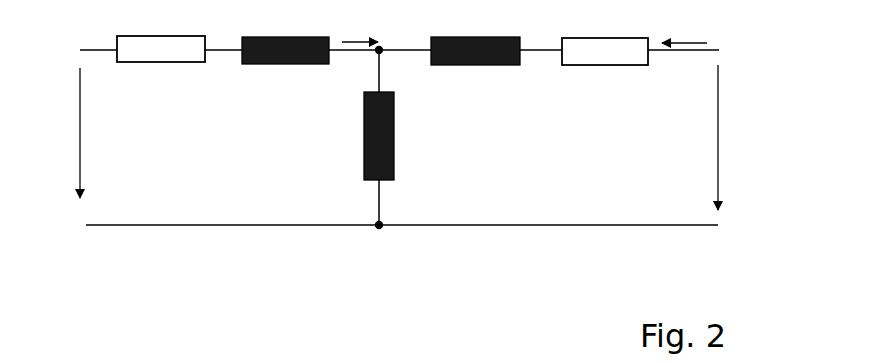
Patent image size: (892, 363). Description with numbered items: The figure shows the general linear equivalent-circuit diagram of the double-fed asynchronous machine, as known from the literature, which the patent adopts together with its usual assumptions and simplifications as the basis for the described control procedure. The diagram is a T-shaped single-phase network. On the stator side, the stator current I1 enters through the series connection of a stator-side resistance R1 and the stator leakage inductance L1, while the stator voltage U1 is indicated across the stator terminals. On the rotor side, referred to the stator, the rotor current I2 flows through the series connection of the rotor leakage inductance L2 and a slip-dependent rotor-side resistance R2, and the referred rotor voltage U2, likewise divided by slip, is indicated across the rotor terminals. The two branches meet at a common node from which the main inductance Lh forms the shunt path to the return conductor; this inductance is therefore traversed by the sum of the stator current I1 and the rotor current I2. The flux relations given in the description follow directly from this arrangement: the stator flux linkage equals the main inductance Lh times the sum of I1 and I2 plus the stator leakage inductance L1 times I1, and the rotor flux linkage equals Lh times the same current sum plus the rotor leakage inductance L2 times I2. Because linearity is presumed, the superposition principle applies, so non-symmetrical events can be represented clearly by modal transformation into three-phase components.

The rotor resistance R2'/s (referred to stator, divided by slip) R2 is at (161, 67).
The rotor leakage inductance L2 is at (285, 67).
The stator leakage inductance L1 is at (475, 67).
The stator resistance R1 is at (605, 69).
The main inductance Lh is at (402, 136).
The rotor voltage U2'/s U2 is at (112, 133).
The stator voltage U1 is at (742, 137).
The rotor current I2 is at (360, 28).
The stator current I1 is at (684, 29).